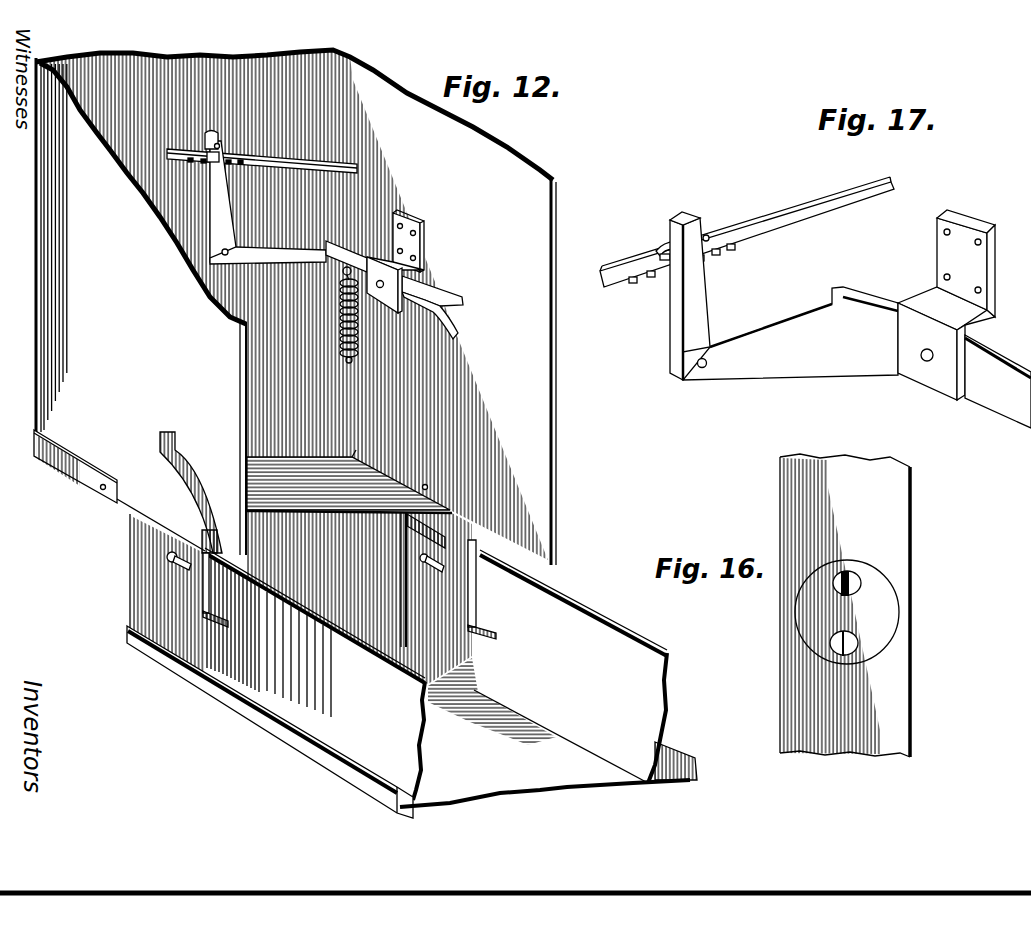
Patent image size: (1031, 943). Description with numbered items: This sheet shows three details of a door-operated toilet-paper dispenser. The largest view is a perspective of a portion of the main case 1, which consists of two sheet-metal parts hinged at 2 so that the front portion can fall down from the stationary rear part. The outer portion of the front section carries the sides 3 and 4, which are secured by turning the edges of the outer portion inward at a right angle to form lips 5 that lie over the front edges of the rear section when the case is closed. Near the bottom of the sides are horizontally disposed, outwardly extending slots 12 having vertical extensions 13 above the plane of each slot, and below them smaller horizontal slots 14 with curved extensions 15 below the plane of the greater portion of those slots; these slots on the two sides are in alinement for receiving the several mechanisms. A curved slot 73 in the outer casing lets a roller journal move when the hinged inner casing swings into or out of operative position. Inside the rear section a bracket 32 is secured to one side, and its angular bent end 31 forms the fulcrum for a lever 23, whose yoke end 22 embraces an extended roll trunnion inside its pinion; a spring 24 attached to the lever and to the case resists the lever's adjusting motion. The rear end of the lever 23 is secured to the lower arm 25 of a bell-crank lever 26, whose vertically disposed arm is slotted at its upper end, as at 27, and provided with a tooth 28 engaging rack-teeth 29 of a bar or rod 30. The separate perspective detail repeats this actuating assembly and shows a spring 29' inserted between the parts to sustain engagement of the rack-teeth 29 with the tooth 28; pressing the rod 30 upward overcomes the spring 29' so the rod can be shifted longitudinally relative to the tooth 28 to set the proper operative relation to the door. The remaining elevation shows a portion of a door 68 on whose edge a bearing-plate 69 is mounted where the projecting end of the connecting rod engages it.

In FIG. 12, the main case 1 is at (295, 367).
In FIG. 12, the hinge 2 is at (433, 509).
In FIG. 12, the side 3 is at (547, 666).
In FIG. 12, the side 4 is at (276, 683).
In FIG. 12, the lip 5 is at (694, 780).
In FIG. 12, the outwardly-extending slot 12 is at (203, 592).
In FIG. 12, the vertical extension 13 is at (223, 624).
In FIG. 12, the horizontal slot 14 is at (199, 565).
In FIG. 12, the curved extension 15 is at (172, 565).
In FIG. 12, the yoke end 22 is at (457, 333).
In FIG. 12, the lever 23 is at (430, 296).
In FIG. 17, the lever 23 is at (990, 401).
In FIG. 12, the spring 24 is at (360, 328).
In FIG. 12, the lower arm 25 is at (297, 232).
In FIG. 17, the lower arm 25 is at (778, 342).
In FIG. 12, the bell-crank lever 26 is at (242, 201).
In FIG. 17, the bell-crank lever 26 is at (707, 296).
In FIG. 12, the slot 27 is at (223, 146).
In FIG. 17, the slot 27 is at (698, 253).
In FIG. 17, the tooth 28 is at (672, 271).
In FIG. 12, the rack-teeth 29 is at (197, 172).
In FIG. 17, the rack-teeth 29 is at (641, 283).
In FIG. 12, the spring 29' is at (204, 127).
In FIG. 17, the spring 29' is at (721, 224).
In FIG. 12, the bar or rod 30 is at (355, 168).
In FIG. 17, the bar or rod 30 is at (824, 216).
In FIG. 12, the angular bent end 31 is at (395, 285).
In FIG. 17, the angular bent end 31 is at (946, 343).
In FIG. 12, the bracket 32 is at (415, 243).
In FIG. 17, the bracket 32 is at (966, 263).
In FIG. 16, the door 68 is at (893, 515).
In FIG. 16, the bearing-plate 69 is at (887, 619).
In FIG. 12, the curved slot 73 is at (196, 498).